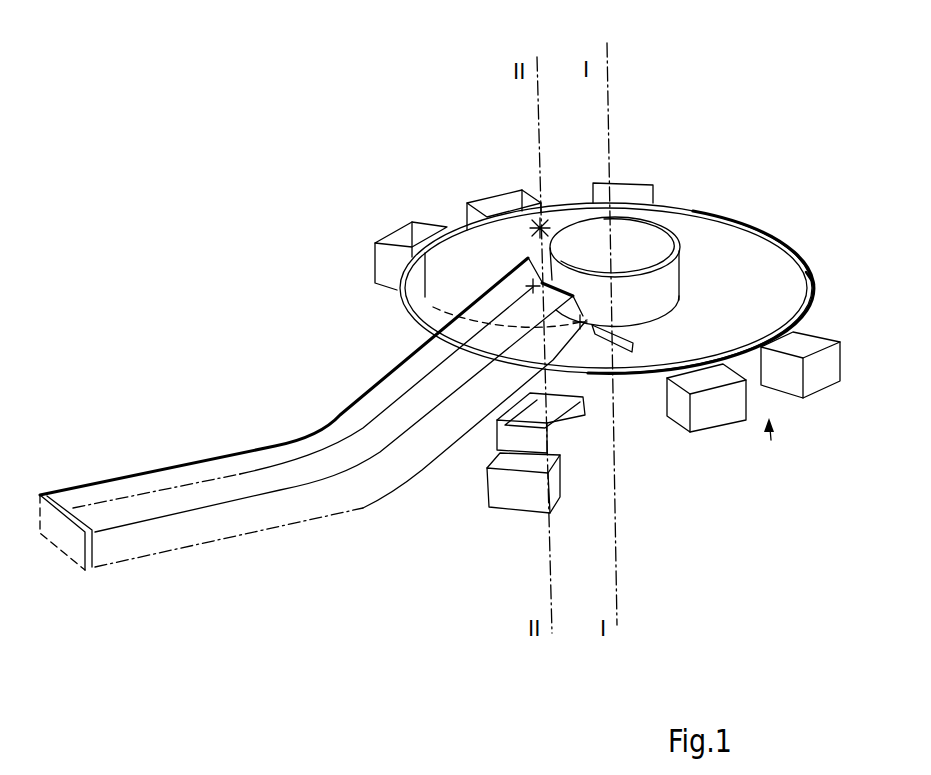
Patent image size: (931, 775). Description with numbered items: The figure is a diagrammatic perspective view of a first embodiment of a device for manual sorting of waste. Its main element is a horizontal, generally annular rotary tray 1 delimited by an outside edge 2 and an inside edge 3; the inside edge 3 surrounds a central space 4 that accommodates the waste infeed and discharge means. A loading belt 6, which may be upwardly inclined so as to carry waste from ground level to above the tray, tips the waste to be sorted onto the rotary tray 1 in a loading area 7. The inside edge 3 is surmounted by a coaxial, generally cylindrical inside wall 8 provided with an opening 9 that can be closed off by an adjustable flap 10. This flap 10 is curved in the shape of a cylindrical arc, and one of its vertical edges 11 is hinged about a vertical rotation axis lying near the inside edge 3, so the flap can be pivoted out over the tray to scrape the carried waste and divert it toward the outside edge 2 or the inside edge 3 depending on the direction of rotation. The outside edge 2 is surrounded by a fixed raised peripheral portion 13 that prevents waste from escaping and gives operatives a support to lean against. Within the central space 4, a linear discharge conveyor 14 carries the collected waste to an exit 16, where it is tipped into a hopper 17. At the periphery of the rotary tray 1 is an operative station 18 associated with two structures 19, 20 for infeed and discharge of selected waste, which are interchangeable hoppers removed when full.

The rotary tray 1 is at (732, 257).
The outside edge 2 is at (776, 236).
The inside edge 3 is at (693, 257).
The central space 4 is at (596, 230).
The loading belt 6 is at (153, 503).
The loading area 7 is at (645, 340).
The inside wall 8 is at (688, 280).
The opening 9 is at (571, 222).
The adjustable flap 10 is at (468, 253).
The vertical edge 11 is at (532, 225).
The peripheral portion 13 is at (811, 278).
The discharge conveyor 14 is at (562, 440).
The exit 16 is at (553, 362).
The hopper 17 is at (503, 503).
The operative station 18 is at (771, 440).
The structure for infeed and discharge of selected waste 19 is at (712, 420).
The structure for infeed and discharge of selected waste 20 is at (822, 383).